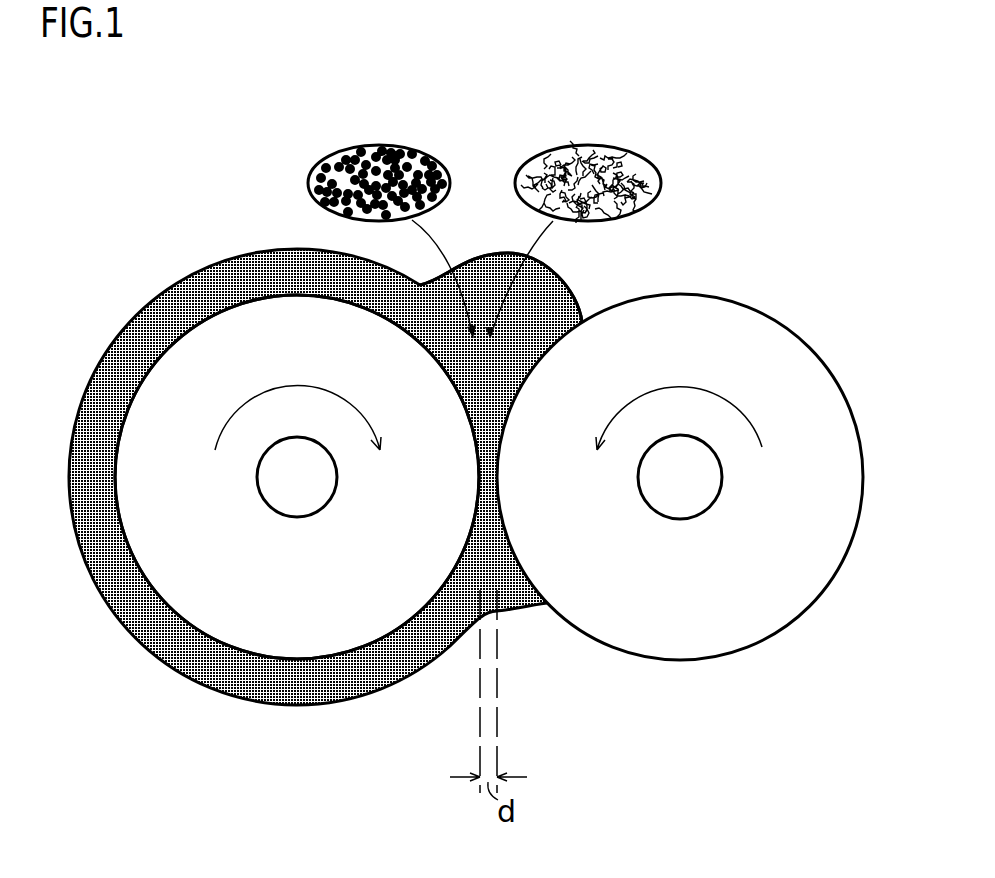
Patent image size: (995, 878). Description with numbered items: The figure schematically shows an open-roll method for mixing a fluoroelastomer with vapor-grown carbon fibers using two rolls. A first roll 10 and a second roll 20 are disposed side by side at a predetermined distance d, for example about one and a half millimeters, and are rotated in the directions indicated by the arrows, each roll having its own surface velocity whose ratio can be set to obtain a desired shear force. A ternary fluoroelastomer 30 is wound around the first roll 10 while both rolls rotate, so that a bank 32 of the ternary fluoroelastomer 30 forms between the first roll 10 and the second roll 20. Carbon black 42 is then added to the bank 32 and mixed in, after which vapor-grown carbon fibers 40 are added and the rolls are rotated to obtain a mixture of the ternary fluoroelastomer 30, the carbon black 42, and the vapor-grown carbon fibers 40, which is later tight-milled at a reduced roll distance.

The first roll 10 is at (320, 609).
The second roll 20 is at (707, 609).
The ternary fluoroelastomer 30 is at (168, 305).
The bank 32 is at (558, 290).
The vapor-grown carbon fibers 40 is at (638, 214).
The carbon black 42 is at (308, 180).